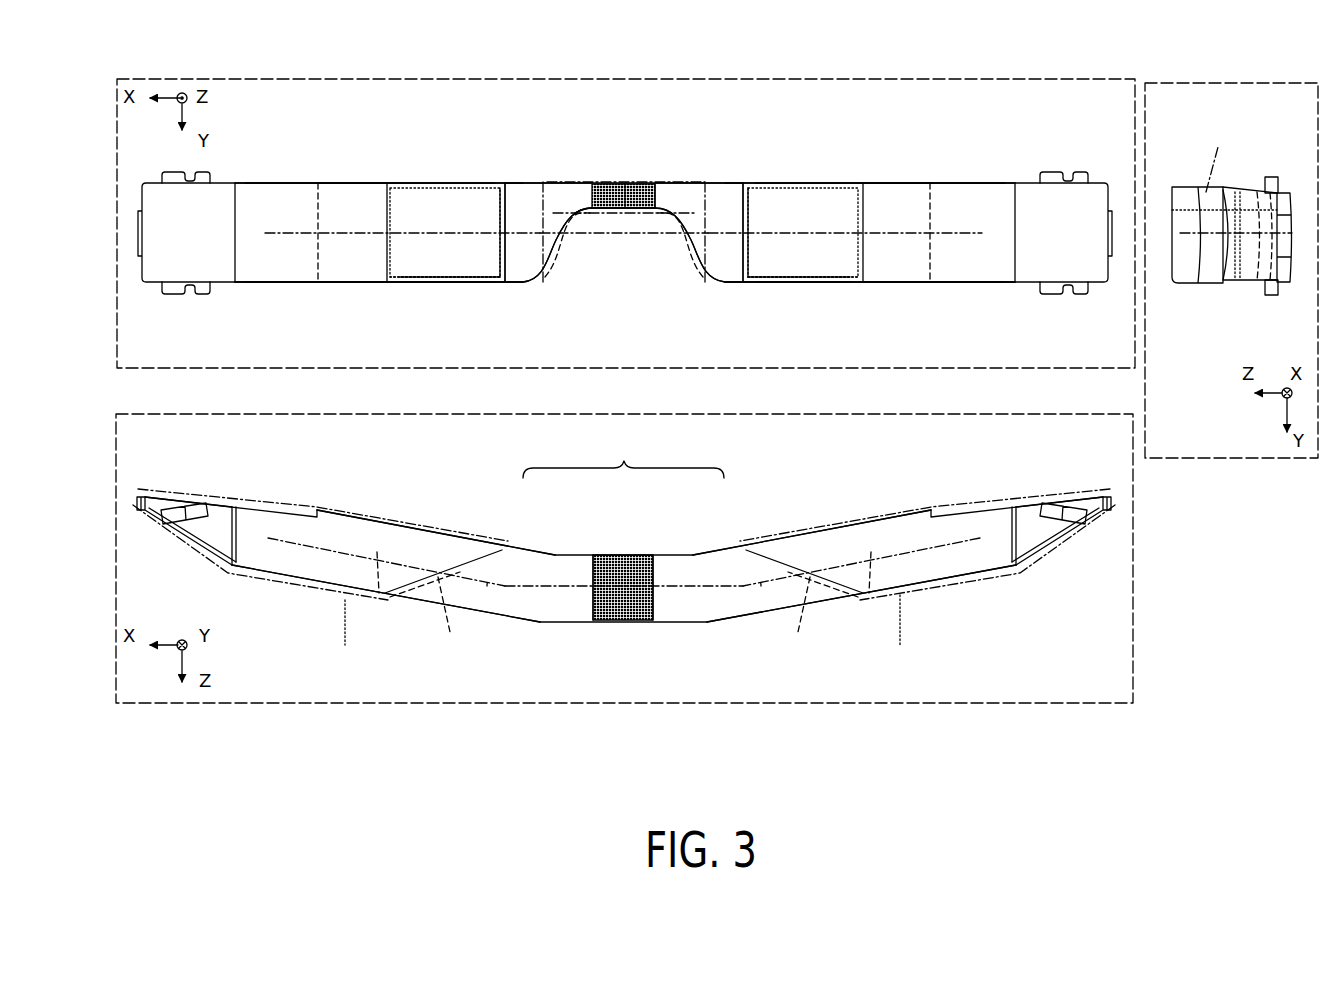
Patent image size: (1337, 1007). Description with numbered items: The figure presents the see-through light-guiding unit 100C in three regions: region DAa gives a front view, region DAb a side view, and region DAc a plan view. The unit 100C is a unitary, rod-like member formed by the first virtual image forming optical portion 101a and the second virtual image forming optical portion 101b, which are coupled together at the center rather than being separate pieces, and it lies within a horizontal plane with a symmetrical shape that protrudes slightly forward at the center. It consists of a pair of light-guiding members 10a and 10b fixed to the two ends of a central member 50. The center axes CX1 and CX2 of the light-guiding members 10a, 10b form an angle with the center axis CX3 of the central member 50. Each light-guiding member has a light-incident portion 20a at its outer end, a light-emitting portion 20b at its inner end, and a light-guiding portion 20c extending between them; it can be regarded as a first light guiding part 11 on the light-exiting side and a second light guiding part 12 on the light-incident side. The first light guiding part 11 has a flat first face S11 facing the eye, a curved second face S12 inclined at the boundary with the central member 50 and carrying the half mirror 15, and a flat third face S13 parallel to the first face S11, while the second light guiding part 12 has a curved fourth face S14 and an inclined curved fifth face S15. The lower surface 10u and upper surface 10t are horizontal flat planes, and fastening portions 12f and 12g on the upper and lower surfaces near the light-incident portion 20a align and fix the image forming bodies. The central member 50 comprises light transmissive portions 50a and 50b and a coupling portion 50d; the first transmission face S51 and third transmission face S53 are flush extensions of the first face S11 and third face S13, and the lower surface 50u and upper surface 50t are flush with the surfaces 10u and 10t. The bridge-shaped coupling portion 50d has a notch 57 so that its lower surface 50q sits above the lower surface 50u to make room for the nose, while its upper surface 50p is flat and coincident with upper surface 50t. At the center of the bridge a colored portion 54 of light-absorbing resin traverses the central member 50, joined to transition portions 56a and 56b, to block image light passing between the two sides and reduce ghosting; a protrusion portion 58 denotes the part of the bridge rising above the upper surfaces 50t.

The light-guiding member 10a is at (386, 158).
The light-guiding member 10b is at (931, 158).
The upper surface 10t is at (292, 183).
The lower surface 10u is at (287, 284).
The first light guiding part 11 is at (357, 197).
The second light guiding part 12 is at (245, 190).
The fastening portion 12f is at (175, 174).
The fastening portion 12g is at (175, 296).
The half mirror 15 is at (425, 190).
The light-incident portion 20a is at (180, 497).
The light-emitting portion 20b is at (460, 535).
The light-guiding portion 20c is at (332, 196).
The central member 50 is at (698, 171).
The light transmissive portion 50a is at (465, 195).
The light transmissive portion 50b is at (782, 195).
The coupling portion 50d is at (573, 182).
The upper surface 50p is at (657, 192).
The lower surface 50q is at (600, 216).
The upper surface 50t is at (489, 184).
The lower surface 50u is at (455, 284).
The colored portion 54 is at (627, 197).
The transition portion 56a is at (550, 265).
The transition portion 56b is at (690, 245).
The notch 57 is at (598, 215).
The protrusion portion 58 is at (600, 577).
The see-through light-guiding unit 100C is at (1057, 158).
The first virtual image forming optical portion 101a is at (300, 295).
The second virtual image forming optical portion 101b is at (955, 295).
The center axis CX1 is at (368, 245).
The center axis CX2 is at (882, 245).
The center axis CX3 is at (648, 214).
The first face S11 is at (430, 520).
The second face S12 is at (440, 274).
The third face S13 is at (335, 273).
The fourth face S14 is at (256, 506).
The fifth face S15 is at (205, 256).
The first transmission face S51 is at (505, 540).
The third transmission face S53 is at (487, 274).
The region DAa is at (707, 83).
The region DAb is at (1222, 83).
The region DAc is at (1134, 527).